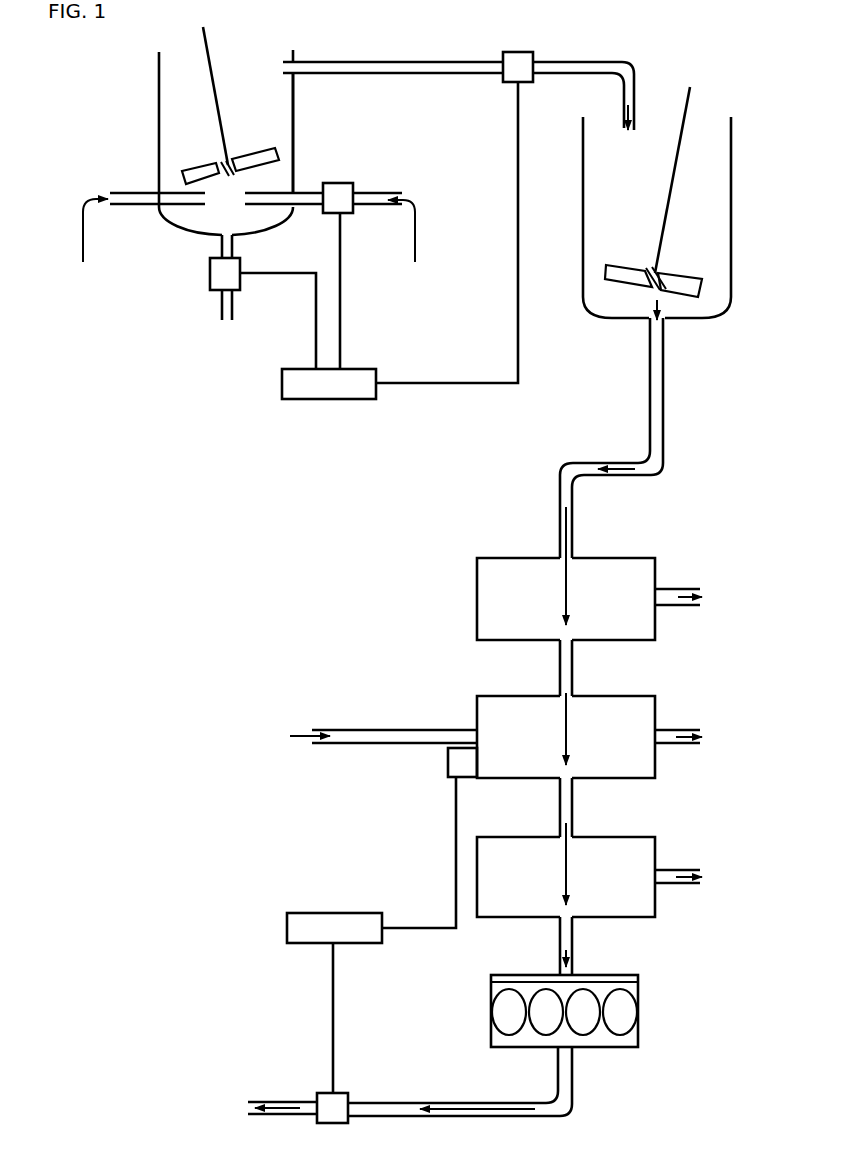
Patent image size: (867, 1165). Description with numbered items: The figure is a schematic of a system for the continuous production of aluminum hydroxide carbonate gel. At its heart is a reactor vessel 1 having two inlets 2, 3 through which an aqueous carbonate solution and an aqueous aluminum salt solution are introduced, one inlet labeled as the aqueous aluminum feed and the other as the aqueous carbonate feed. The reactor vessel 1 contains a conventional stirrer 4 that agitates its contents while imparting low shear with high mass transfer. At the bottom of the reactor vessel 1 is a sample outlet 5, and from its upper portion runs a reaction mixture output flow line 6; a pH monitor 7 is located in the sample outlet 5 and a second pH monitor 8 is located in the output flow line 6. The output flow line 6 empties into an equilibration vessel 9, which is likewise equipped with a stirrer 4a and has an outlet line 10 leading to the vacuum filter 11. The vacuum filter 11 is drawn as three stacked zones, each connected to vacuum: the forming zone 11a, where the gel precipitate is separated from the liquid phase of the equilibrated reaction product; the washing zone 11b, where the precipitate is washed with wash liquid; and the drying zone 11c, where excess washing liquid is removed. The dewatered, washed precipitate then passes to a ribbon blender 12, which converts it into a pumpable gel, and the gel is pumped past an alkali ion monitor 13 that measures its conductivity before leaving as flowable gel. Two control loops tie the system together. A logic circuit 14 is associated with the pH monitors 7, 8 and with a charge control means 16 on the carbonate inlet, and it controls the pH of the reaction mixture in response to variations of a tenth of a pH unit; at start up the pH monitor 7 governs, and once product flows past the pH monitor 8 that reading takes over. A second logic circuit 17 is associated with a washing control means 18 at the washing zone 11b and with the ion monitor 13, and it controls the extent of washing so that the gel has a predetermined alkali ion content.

The reactor vessel 1 is at (217, 143).
The inlet 2 is at (170, 241).
The inlet 3 is at (307, 190).
The stirrer 4 is at (214, 88).
The stirrer 4a is at (688, 96).
The sample outlet 5 is at (236, 247).
The reaction mixture output flow line 6 is at (458, 115).
The pH monitor 7 is at (255, 313).
The pH monitor 8 is at (518, 54).
The equilibration vessel 9 is at (669, 218).
The outlet line 10 is at (629, 438).
The vacuum filter 11 is at (568, 741).
The forming zone 11a is at (619, 573).
The washing zone 11b is at (619, 735).
The drying zone 11c is at (618, 870).
The ribbon blender 12 is at (512, 1045).
The alkali ion monitor 13 is at (204, 1123).
The logic circuit 14 is at (400, 255).
The charge control means 16 is at (353, 276).
The logic circuit 17 is at (334, 1003).
The washing control means 18 is at (304, 826).